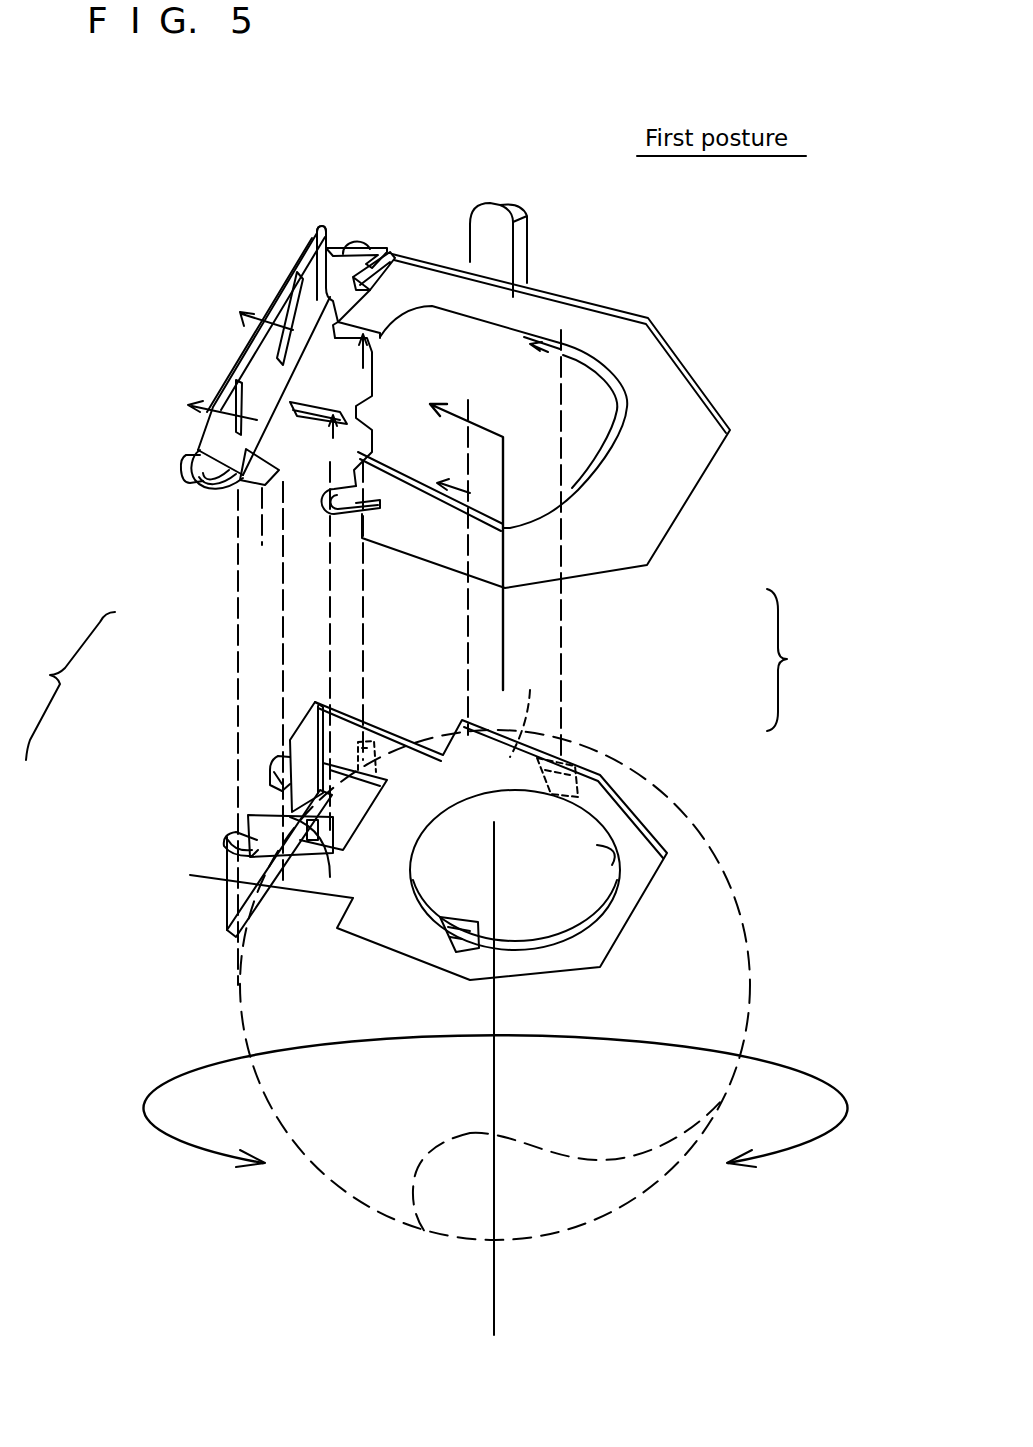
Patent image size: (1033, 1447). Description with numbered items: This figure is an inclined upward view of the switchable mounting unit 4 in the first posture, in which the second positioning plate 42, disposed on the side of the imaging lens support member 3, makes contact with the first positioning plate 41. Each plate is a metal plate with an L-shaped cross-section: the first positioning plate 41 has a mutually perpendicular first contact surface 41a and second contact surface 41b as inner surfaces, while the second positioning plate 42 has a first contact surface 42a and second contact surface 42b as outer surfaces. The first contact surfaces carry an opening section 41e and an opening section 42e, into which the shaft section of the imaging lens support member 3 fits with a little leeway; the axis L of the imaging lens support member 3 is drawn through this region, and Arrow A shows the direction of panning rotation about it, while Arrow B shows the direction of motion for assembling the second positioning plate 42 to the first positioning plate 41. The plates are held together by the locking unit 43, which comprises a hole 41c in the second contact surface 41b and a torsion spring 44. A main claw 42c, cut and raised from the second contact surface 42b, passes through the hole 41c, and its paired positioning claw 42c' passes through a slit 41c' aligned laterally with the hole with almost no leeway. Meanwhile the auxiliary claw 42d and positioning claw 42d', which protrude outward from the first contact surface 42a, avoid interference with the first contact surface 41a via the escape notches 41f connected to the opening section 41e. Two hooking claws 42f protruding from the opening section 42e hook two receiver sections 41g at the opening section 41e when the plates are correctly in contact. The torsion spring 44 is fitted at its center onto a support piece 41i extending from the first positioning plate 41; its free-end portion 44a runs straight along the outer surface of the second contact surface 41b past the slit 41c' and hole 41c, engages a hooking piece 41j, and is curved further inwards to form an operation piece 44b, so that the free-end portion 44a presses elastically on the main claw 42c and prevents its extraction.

The imaging lens support member 3 is at (780, 960).
The switchable mounting unit 4 is at (786, 660).
The first positioning plate 41 is at (678, 577).
The first contact surface 41a is at (408, 545).
The second contact surface 41b is at (265, 524).
The hole 41c is at (267, 300).
The slit 41c' is at (213, 385).
The opening section 41e is at (522, 302).
The escape notches 41f is at (317, 402).
The receiver sections 41g is at (543, 345).
The support piece 41i is at (183, 466).
The hooking piece 41j is at (324, 225).
The second positioning plate 42 is at (703, 790).
The first contact surface 42a is at (534, 708).
The second contact surface 42b is at (233, 897).
The main claw 42c is at (181, 738).
The positioning claw 42c' is at (185, 827).
The auxiliary claw 42d is at (217, 789).
The positioning claw 42d' is at (398, 709).
The opening section 42e is at (620, 862).
The hooking claws 42f is at (588, 760).
The locking unit 43 is at (66, 686).
The torsion spring 44 is at (205, 513).
The free-end portion 44a is at (260, 357).
The operation piece 44b is at (368, 243).
The Arrow A is at (813, 1071).
The Arrow B is at (505, 466).
The axis L is at (494, 1293).